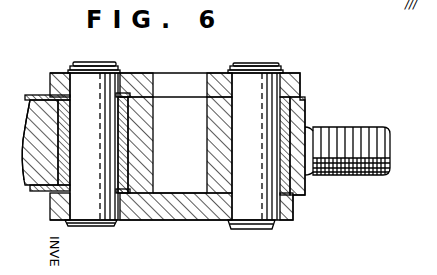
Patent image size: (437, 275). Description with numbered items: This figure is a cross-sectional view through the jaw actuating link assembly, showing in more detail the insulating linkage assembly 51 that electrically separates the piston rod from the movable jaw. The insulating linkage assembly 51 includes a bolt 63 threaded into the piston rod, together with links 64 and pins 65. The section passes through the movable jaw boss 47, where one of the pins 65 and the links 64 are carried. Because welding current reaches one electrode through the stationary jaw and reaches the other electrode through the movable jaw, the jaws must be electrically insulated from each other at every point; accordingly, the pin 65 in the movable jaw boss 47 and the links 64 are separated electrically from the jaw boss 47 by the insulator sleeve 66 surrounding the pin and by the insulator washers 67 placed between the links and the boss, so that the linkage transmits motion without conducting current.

The links 64 is at (181, 82).
The pins 65 is at (95, 78).
The insulator washers 67 is at (45, 92).
The movable jaw boss 47 is at (35, 172).
The insulator sleeve 66 is at (36, 143).
The insulating linkage assembly 51 is at (250, 233).
The bolt 63 is at (367, 131).